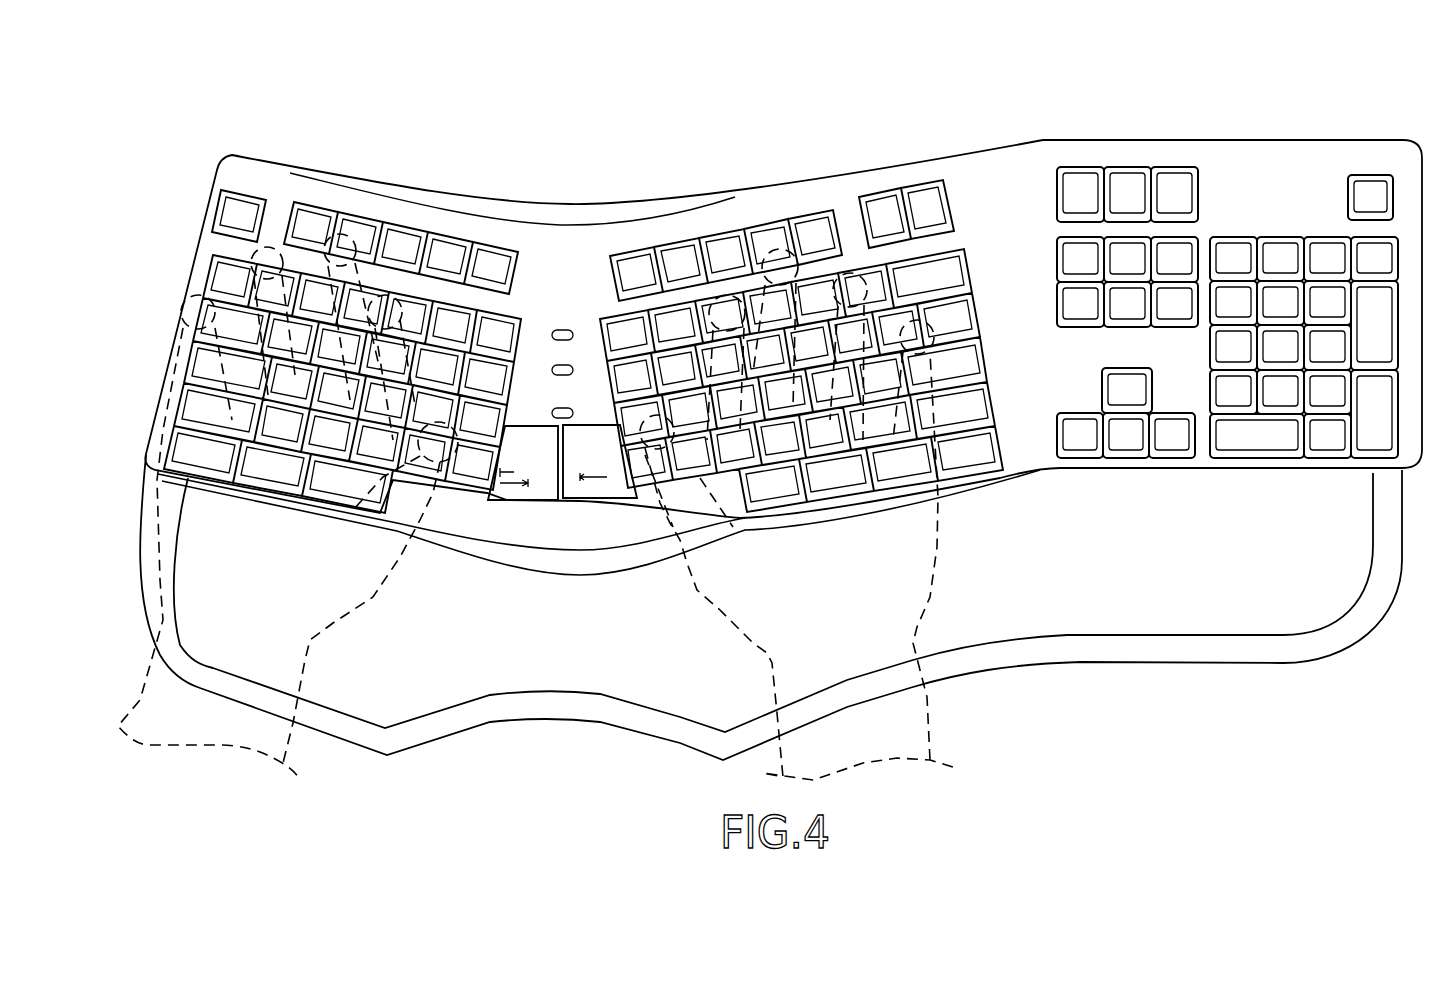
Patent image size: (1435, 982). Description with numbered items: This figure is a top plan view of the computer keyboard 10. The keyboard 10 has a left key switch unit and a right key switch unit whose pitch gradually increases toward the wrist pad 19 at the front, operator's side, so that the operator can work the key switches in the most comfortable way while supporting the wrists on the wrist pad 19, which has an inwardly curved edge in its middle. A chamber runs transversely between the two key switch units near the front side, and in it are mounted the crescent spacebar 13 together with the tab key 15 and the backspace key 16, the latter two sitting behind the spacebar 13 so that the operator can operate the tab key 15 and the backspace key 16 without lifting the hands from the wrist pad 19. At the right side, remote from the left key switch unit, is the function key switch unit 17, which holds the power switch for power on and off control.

The keyboard 10 is at (1098, 140).
The crescent spacebar 13 is at (523, 540).
The tab key 15 is at (595, 477).
The backspace key 16 is at (535, 472).
The function key switch unit 17 is at (1254, 202).
The wrist pad 19 is at (1243, 655).